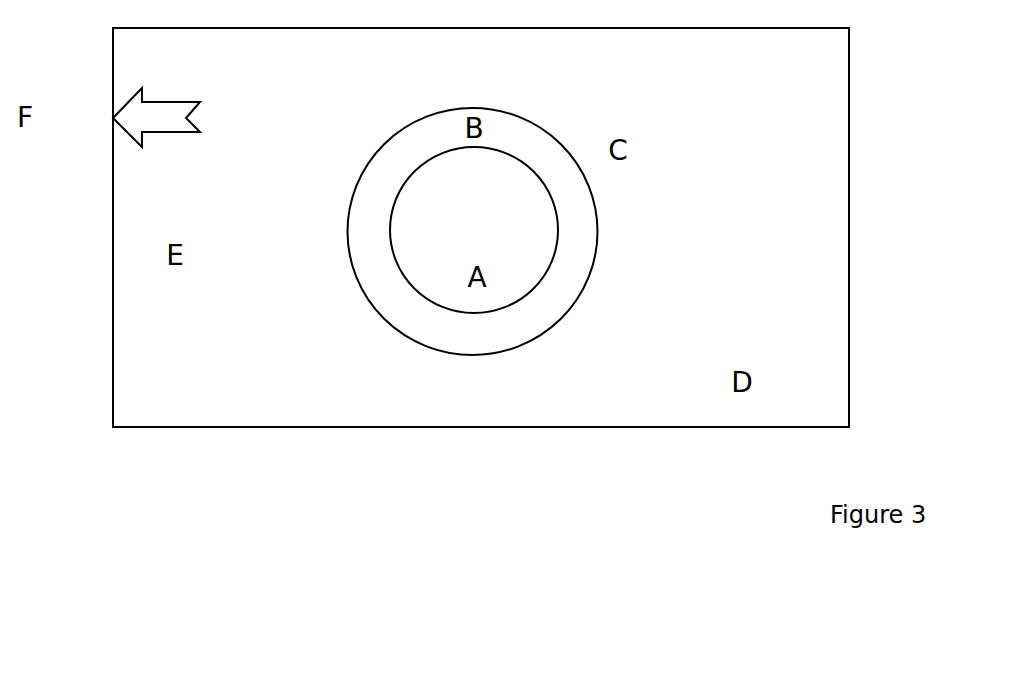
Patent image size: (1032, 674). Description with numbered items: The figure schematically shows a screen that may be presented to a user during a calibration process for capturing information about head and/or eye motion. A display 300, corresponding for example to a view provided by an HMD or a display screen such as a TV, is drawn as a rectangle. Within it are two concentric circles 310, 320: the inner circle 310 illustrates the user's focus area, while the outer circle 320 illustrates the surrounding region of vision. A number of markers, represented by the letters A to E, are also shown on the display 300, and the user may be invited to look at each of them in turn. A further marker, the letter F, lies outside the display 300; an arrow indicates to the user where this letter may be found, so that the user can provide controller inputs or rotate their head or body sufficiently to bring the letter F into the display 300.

The display 300 is at (447, 266).
The concentric circle 310 is at (474, 230).
The concentric circle 320 is at (473, 231).